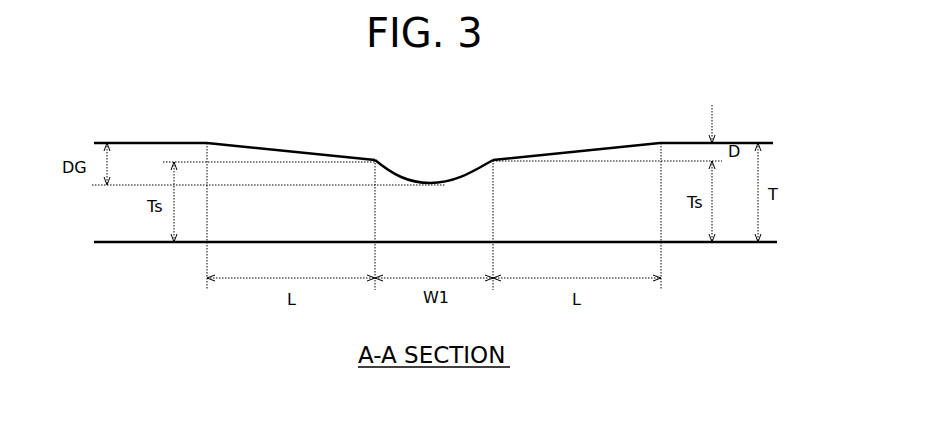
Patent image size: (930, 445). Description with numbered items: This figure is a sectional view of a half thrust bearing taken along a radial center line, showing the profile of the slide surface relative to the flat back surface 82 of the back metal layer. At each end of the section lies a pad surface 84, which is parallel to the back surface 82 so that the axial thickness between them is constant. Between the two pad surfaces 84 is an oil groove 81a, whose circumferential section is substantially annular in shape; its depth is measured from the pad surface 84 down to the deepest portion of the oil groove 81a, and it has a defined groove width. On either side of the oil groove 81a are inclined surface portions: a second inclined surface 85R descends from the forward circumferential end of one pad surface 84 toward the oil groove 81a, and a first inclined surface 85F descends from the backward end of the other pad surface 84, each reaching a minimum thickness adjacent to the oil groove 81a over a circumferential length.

The pad surface 84 is at (117, 143).
The second inclined surface 85R is at (285, 151).
The oil groove 81a is at (432, 182).
The first inclined surface 85F is at (540, 155).
The back surface 82 is at (680, 242).